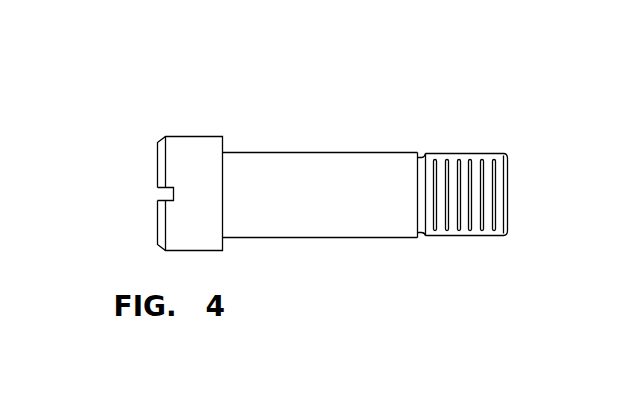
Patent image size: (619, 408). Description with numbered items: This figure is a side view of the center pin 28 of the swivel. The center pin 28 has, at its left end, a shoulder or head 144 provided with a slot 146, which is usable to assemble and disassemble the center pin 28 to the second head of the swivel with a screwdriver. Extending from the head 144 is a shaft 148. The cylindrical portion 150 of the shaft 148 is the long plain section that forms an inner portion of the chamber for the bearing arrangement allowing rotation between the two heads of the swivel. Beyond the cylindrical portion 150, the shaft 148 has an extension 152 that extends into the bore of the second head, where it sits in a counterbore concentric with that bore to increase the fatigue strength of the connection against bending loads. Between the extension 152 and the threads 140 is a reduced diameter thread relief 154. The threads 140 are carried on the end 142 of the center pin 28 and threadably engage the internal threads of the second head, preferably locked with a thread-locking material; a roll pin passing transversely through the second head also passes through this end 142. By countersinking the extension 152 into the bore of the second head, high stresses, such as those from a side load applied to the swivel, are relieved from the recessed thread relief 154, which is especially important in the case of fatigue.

The center pin 28 is at (353, 122).
The threads 140 is at (468, 235).
The end 142 is at (510, 170).
The shoulder or head 144 is at (196, 144).
The slot 146 is at (166, 196).
The shaft 148 is at (294, 152).
The cylindrical portion 150 is at (298, 237).
The extension 152 is at (415, 238).
The thread relief 154 is at (425, 153).